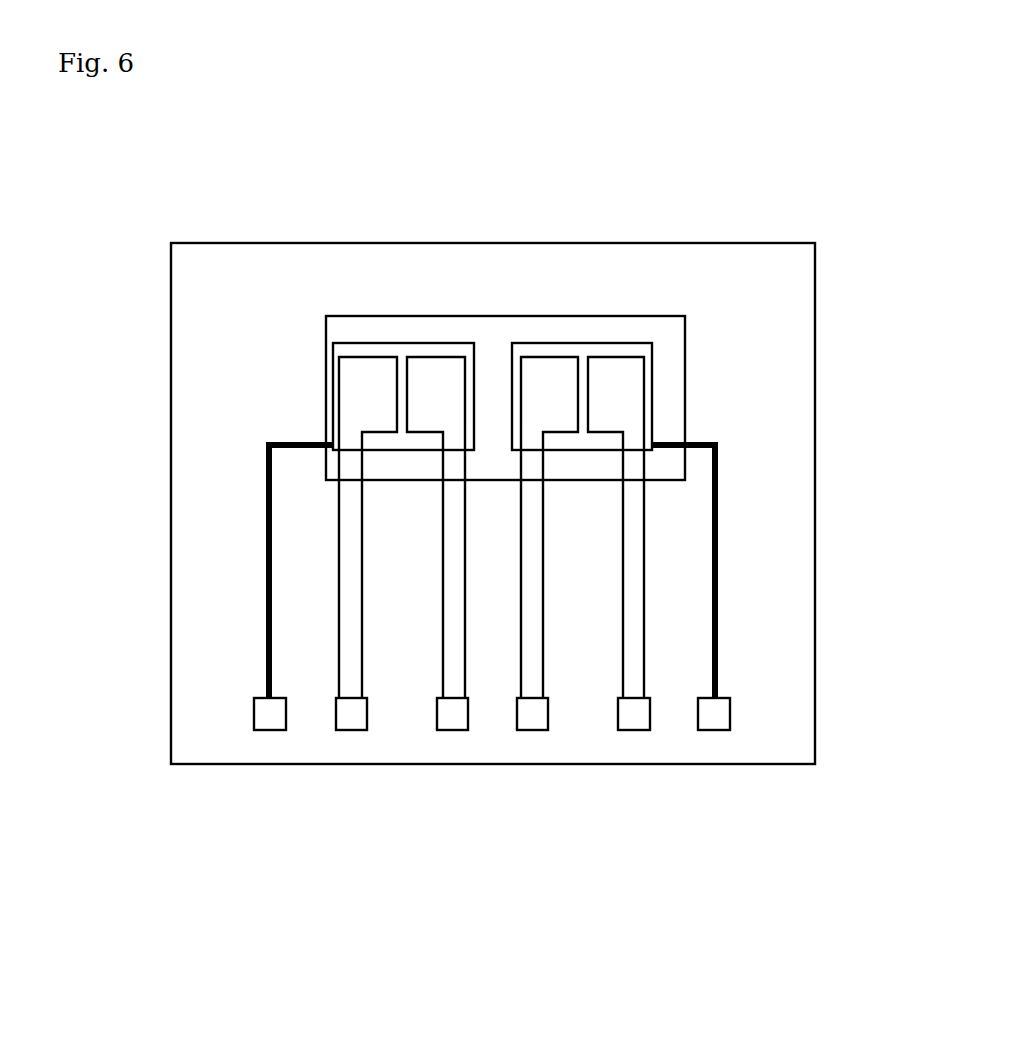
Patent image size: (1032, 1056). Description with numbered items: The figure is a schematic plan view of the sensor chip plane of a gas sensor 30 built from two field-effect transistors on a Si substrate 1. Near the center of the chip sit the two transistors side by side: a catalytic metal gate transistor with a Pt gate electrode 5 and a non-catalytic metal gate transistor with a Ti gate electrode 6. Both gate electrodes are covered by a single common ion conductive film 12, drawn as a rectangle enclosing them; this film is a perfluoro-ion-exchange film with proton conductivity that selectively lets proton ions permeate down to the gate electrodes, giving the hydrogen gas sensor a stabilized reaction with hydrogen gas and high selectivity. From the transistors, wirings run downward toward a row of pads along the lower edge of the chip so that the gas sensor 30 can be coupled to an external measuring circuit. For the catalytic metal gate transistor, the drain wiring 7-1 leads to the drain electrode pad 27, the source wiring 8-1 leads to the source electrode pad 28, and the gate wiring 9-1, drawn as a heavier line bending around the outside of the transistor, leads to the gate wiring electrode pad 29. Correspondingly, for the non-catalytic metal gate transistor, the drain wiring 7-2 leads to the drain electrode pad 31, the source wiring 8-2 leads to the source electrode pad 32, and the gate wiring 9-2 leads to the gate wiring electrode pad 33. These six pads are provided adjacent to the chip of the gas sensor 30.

The Si substrate 1 is at (228, 290).
The ion conductive film 12 is at (368, 327).
The Ti gate electrode 6 is at (393, 353).
The Pt gate electrode 5 is at (582, 350).
The gas sensor 30 is at (660, 190).
The drain wiring 7-1 is at (638, 672).
The drain wiring 7-2 is at (447, 675).
The source wiring 8-1 is at (537, 673).
The source wiring 8-2 is at (352, 673).
The gate wiring 9-1 is at (717, 617).
The gate wiring 9-2 is at (267, 605).
The drain electrode pad 27 is at (630, 718).
The source electrode pad 28 is at (532, 718).
The gate wiring electrode pad 29 is at (720, 718).
The drain electrode pad 31 is at (458, 715).
The source electrode pad 32 is at (357, 718).
The gate wiring electrode pad 33 is at (268, 730).